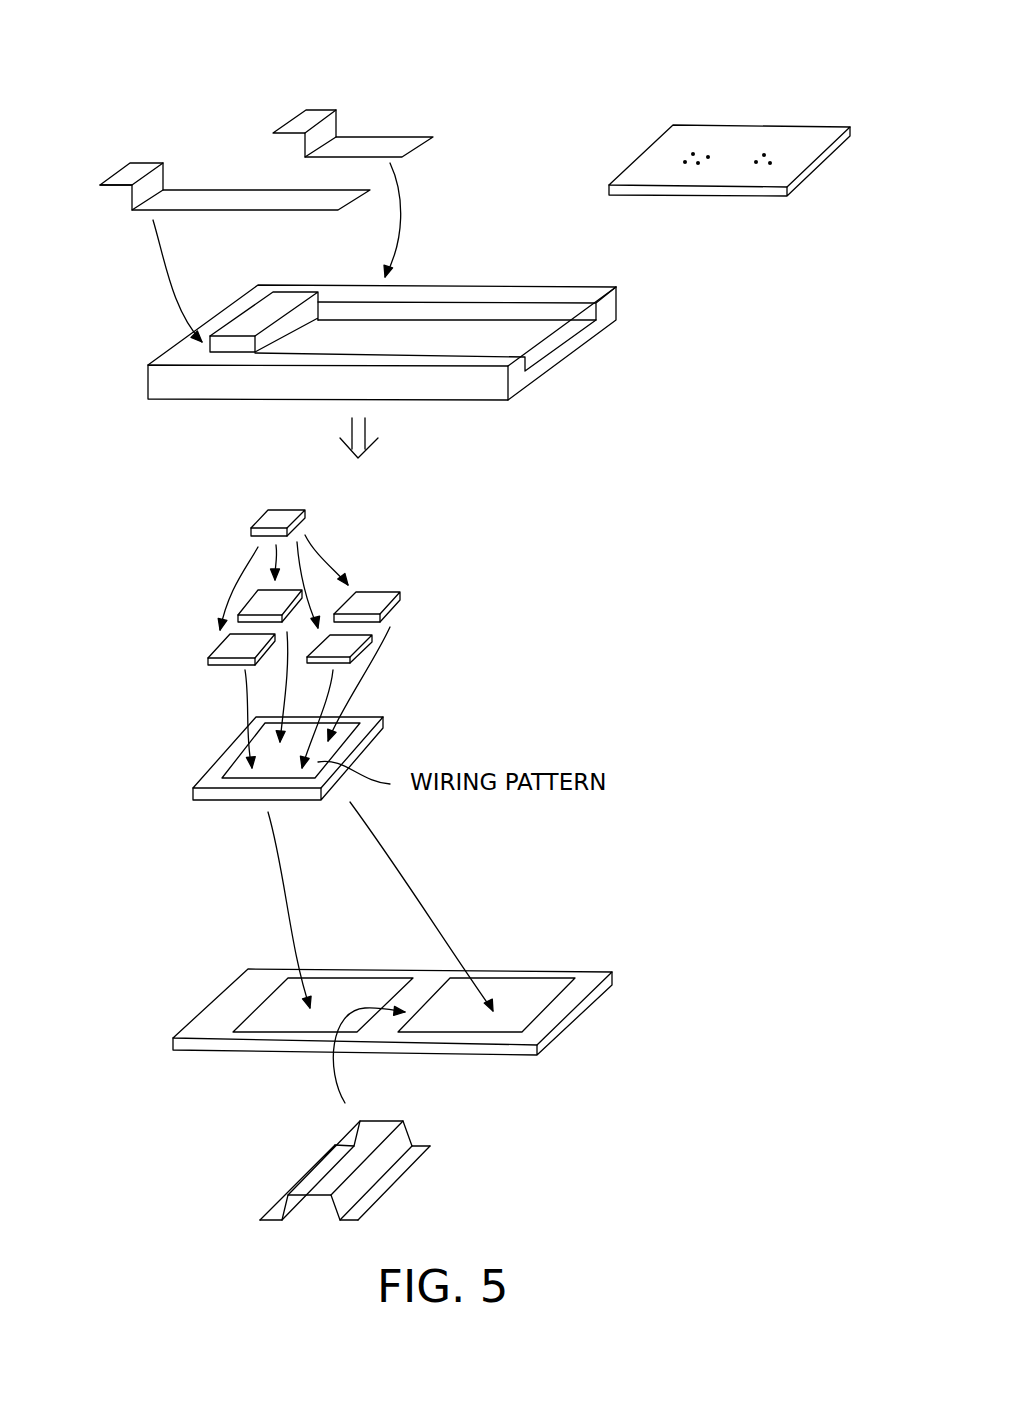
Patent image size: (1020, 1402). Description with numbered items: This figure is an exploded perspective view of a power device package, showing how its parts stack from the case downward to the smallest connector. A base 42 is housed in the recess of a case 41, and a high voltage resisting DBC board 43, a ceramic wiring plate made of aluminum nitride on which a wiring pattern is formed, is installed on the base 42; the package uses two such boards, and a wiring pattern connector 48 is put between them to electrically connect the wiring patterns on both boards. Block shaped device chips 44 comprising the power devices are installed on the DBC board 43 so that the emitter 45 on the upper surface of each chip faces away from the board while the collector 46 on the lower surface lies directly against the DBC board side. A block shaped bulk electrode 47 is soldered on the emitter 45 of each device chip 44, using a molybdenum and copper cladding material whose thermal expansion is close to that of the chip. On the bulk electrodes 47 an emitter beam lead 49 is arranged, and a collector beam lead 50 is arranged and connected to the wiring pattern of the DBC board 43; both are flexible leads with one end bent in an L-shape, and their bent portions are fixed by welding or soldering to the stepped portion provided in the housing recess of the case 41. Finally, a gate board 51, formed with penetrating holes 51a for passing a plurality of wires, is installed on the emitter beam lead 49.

The case 41 is at (563, 355).
The base 42 is at (582, 1003).
The DBC board 43 is at (370, 723).
The device chip 44 is at (403, 597).
The emitter 45 is at (220, 645).
The collector 46 is at (222, 670).
The bulk electrode 47 is at (245, 534).
The wiring pattern connector 48 is at (397, 1185).
The emitter beam lead 49 is at (150, 162).
The collector beam lead 50 is at (376, 135).
The gate board 51 is at (748, 135).
The penetrating holes 51a is at (781, 156).